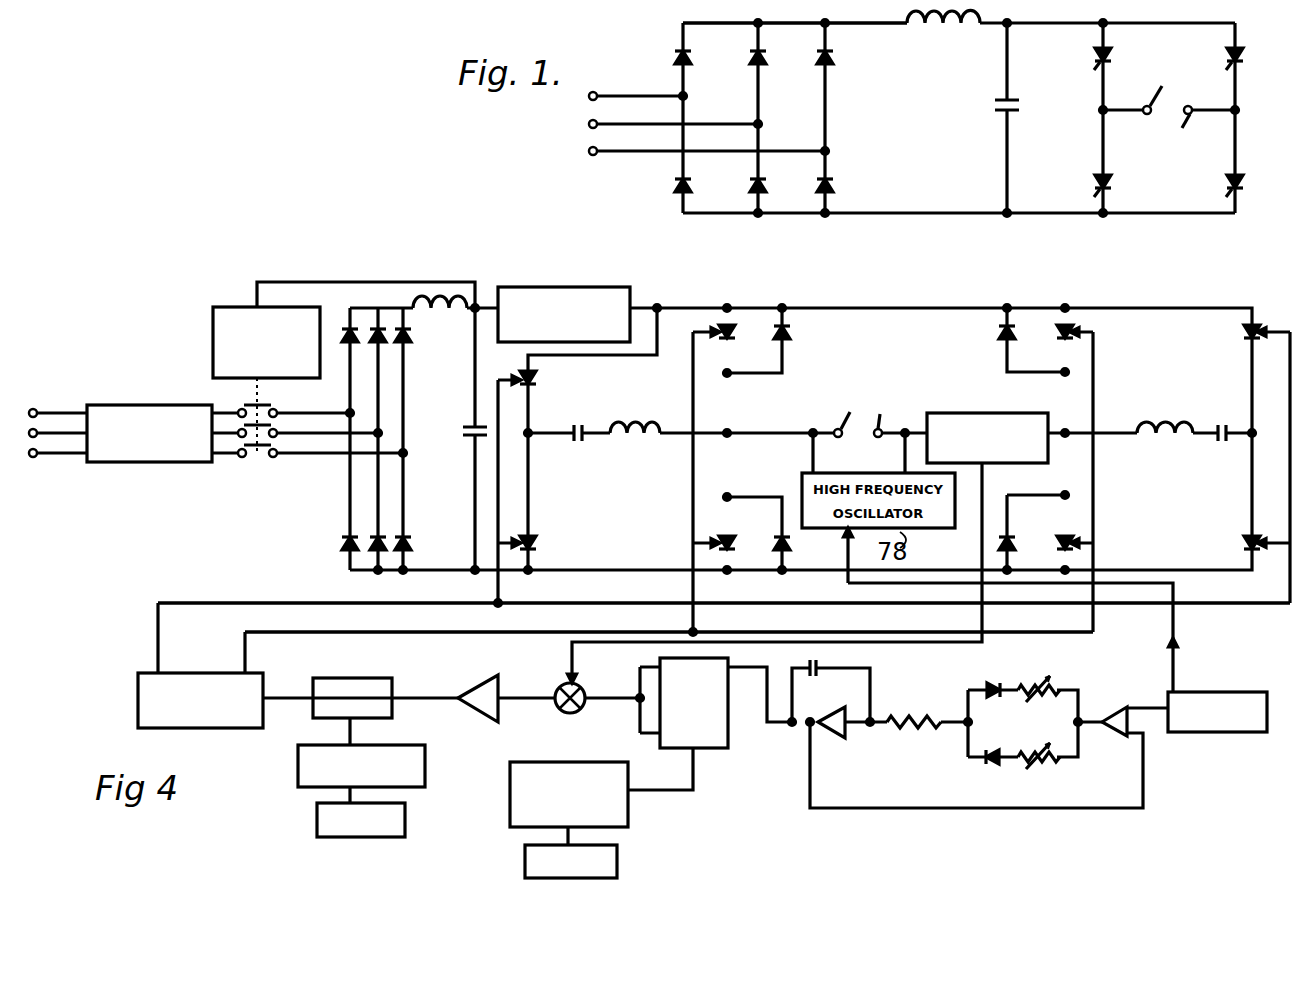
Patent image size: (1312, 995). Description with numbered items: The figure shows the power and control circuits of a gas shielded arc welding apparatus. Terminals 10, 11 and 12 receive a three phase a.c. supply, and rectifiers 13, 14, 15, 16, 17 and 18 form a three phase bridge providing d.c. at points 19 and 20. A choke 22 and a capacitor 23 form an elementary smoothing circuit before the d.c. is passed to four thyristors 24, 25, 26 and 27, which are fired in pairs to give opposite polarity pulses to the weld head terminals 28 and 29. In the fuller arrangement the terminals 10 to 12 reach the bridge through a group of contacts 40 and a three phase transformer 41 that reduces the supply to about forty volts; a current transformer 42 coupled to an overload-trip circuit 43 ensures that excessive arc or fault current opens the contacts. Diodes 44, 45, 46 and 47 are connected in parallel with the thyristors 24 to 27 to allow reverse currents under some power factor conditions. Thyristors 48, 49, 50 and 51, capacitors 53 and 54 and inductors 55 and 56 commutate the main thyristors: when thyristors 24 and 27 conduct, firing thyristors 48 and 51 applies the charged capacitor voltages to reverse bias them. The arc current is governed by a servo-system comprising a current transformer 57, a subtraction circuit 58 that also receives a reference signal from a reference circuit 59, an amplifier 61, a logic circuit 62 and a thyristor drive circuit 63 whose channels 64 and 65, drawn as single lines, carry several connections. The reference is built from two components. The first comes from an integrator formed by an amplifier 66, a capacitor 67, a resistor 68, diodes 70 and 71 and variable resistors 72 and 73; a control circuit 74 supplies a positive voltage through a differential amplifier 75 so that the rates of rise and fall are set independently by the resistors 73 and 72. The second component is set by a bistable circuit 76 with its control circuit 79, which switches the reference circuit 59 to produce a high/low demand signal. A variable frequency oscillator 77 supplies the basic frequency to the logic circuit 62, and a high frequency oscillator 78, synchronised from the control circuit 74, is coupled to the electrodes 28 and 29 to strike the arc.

In FIG. 1, the terminal 10 is at (594, 92).
In FIG. 4, the terminal 10 is at (35, 408).
In FIG. 1, the terminal 11 is at (589, 124).
In FIG. 4, the terminal 11 is at (37, 430).
In FIG. 1, the terminal 12 is at (593, 156).
In FIG. 4, the terminal 12 is at (35, 457).
In FIG. 1, the rectifier 13 is at (676, 52).
In FIG. 4, the rectifier 13 is at (341, 333).
In FIG. 1, the rectifier 14 is at (751, 56).
In FIG. 4, the rectifier 14 is at (378, 344).
In FIG. 1, the rectifier 15 is at (818, 56).
In FIG. 4, the rectifier 15 is at (410, 340).
In FIG. 1, the rectifier 16 is at (675, 187).
In FIG. 4, the rectifier 16 is at (342, 541).
In FIG. 1, the rectifier 17 is at (750, 186).
In FIG. 4, the rectifier 17 is at (382, 535).
In FIG. 1, the rectifier 18 is at (817, 186).
In FIG. 4, the rectifier 18 is at (411, 543).
In FIG. 1, the d.c. point 19 is at (832, 27).
In FIG. 1, the d.c. point 20 is at (832, 208).
In FIG. 1, the choke 22 is at (950, 32).
In FIG. 4, the choke 22 is at (440, 318).
In FIG. 1, the capacitor 23 is at (997, 100).
In FIG. 4, the capacitor 23 is at (466, 425).
In FIG. 1, the thyristor 24 is at (1093, 56).
In FIG. 4, the thyristor 24 is at (745, 348).
In FIG. 1, the thyristor 25 is at (1225, 56).
In FIG. 4, the thyristor 25 is at (1057, 335).
In FIG. 1, the thyristor 26 is at (1093, 182).
In FIG. 4, the thyristor 26 is at (715, 538).
In FIG. 1, the thyristor 27 is at (1225, 183).
In FIG. 4, the thyristor 27 is at (1072, 535).
In FIG. 1, the terminal 28 is at (1131, 90).
In FIG. 4, the terminal 28 is at (831, 412).
In FIG. 1, the terminal 29 is at (1202, 130).
In FIG. 4, the terminal 29 is at (887, 412).
In FIG. 4, the group of contacts 40 is at (258, 462).
In FIG. 4, the three phase transformer 41 is at (150, 466).
In FIG. 4, the current transformer 42 is at (562, 287).
In FIG. 4, the overload-trip circuit 43 is at (213, 342).
In FIG. 4, the diode 44 is at (790, 333).
In FIG. 4, the diode 45 is at (998, 333).
In FIG. 4, the diode 46 is at (776, 540).
In FIG. 4, the diode 47 is at (1011, 540).
In FIG. 4, the thyristor 48 is at (522, 376).
In FIG. 4, the thyristor 49 is at (1244, 332).
In FIG. 4, the thyristor 50 is at (536, 541).
In FIG. 4, the thyristor 51 is at (1244, 540).
In FIG. 4, the capacitor 53 is at (575, 425).
In FIG. 4, the capacitor 54 is at (1222, 425).
In FIG. 4, the inductor 55 is at (646, 422).
In FIG. 4, the inductor 56 is at (1168, 422).
In FIG. 4, the current transformer 57 is at (972, 413).
In FIG. 4, the subtraction circuit 58 is at (583, 688).
In FIG. 4, the reference circuit 59 is at (728, 740).
In FIG. 4, the amplifier 61 is at (498, 685).
In FIG. 4, the logic circuit 62 is at (378, 678).
In FIG. 4, the thyristor drive circuit 63 is at (207, 673).
In FIG. 4, the channel 64 is at (286, 632).
In FIG. 4, the channel 65 is at (208, 603).
In FIG. 4, the amplifier 66 is at (845, 736).
In FIG. 4, the capacitor 67 is at (818, 676).
In FIG. 4, the resistor 68 is at (914, 728).
In FIG. 4, the diode 70 is at (982, 688).
In FIG. 4, the diode 71 is at (994, 762).
In FIG. 4, the variable resistor 72 is at (1032, 682).
In FIG. 4, the variable resistor 73 is at (1042, 762).
In FIG. 4, the control circuit 74 is at (1226, 692).
In FIG. 4, the differential amplifier 75 is at (1118, 705).
In FIG. 4, the bistable circuit 76 is at (548, 762).
In FIG. 4, the oscillator 77 is at (410, 745).
In FIG. 4, the high frequency oscillator 78 is at (405, 820).
In FIG. 4, the control circuit 79 is at (617, 860).